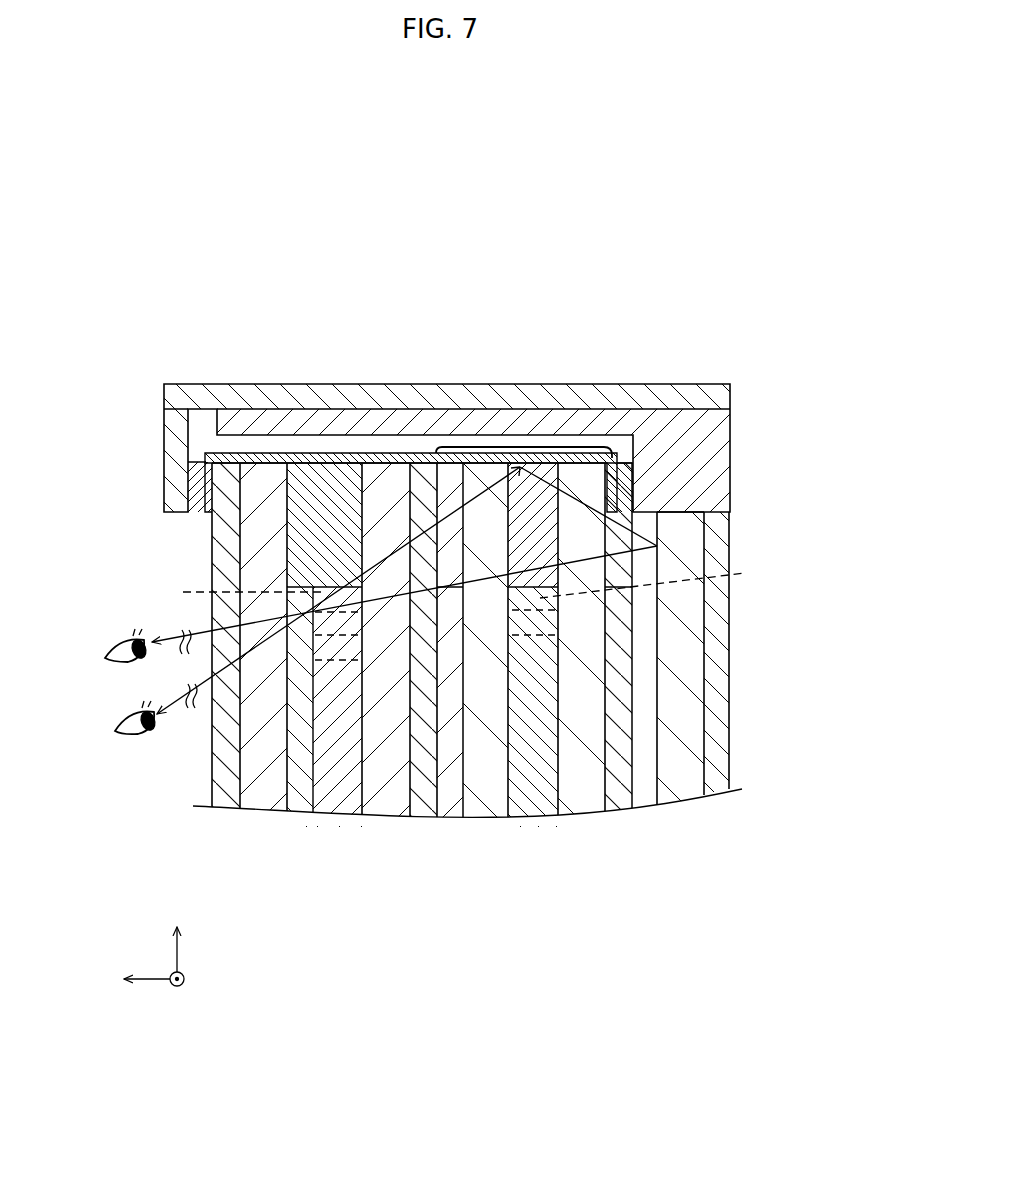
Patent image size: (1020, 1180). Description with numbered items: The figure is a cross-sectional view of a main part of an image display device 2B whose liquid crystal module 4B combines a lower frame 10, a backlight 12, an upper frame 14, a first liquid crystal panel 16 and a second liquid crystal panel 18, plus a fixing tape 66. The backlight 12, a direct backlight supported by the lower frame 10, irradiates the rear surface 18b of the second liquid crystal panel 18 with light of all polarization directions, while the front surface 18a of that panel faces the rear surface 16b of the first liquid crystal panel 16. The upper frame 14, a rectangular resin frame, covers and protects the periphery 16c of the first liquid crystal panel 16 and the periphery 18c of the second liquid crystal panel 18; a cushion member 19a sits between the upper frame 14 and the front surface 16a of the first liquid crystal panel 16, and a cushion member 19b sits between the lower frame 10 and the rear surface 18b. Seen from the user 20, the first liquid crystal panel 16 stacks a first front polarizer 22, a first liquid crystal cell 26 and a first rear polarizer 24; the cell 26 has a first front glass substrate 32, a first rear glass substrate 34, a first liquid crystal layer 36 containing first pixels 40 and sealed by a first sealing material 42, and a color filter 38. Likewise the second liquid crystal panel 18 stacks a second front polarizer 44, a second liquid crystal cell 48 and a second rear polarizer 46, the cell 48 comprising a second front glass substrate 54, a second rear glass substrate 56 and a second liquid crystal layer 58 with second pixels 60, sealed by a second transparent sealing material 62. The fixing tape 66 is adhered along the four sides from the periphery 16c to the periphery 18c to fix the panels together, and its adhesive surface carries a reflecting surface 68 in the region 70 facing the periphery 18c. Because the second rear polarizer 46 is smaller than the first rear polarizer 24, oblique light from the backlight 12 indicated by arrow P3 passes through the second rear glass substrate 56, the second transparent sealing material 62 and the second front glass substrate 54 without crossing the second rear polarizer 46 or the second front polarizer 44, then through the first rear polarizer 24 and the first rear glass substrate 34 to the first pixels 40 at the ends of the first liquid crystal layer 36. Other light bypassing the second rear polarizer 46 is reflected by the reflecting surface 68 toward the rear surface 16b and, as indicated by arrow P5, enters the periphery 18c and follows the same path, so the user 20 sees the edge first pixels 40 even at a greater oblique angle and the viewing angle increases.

The image display device 2B is at (742, 335).
The liquid crystal module 4B is at (738, 420).
The lower frame 10 is at (714, 618).
The backlight 12 is at (678, 674).
The upper frame 14 is at (176, 444).
The first liquid crystal panel 16 is at (423, 882).
The front surface 16a is at (210, 789).
The rear surface 16b is at (445, 467).
The periphery 16c is at (297, 460).
The second liquid crystal panel 18 is at (637, 882).
The front surface 18a is at (438, 780).
The rear surface 18b is at (637, 782).
The periphery 18c is at (573, 457).
The cushion member 19a is at (196, 490).
The cushion member 19b is at (624, 482).
The user 20 is at (122, 667).
The first front polarizer 22 is at (227, 800).
The first rear polarizer 24 is at (420, 800).
The first liquid crystal cell 26 is at (398, 845).
The first front glass substrate 32 is at (258, 793).
The first rear glass substrate 34 is at (385, 793).
The first liquid crystal layer 36 is at (333, 793).
The color filter 38 is at (299, 793).
The first pixels 40 is at (235, 591).
The first sealing material 42 is at (318, 477).
The second front polarizer 44 is at (448, 800).
The second rear polarizer 46 is at (620, 802).
The second liquid crystal cell 48 is at (595, 845).
The second front glass substrate 54 is at (487, 800).
The second rear glass substrate 56 is at (580, 800).
The second liquid crystal layer 58 is at (530, 800).
The second pixels 60 is at (661, 582).
The second transparent sealing material 62 is at (517, 458).
The fixing tape 66 is at (380, 455).
The reflecting surface 68 is at (614, 456).
The region 70 is at (545, 447).
The arrow P3 is at (630, 549).
The arrow P5 is at (178, 703).